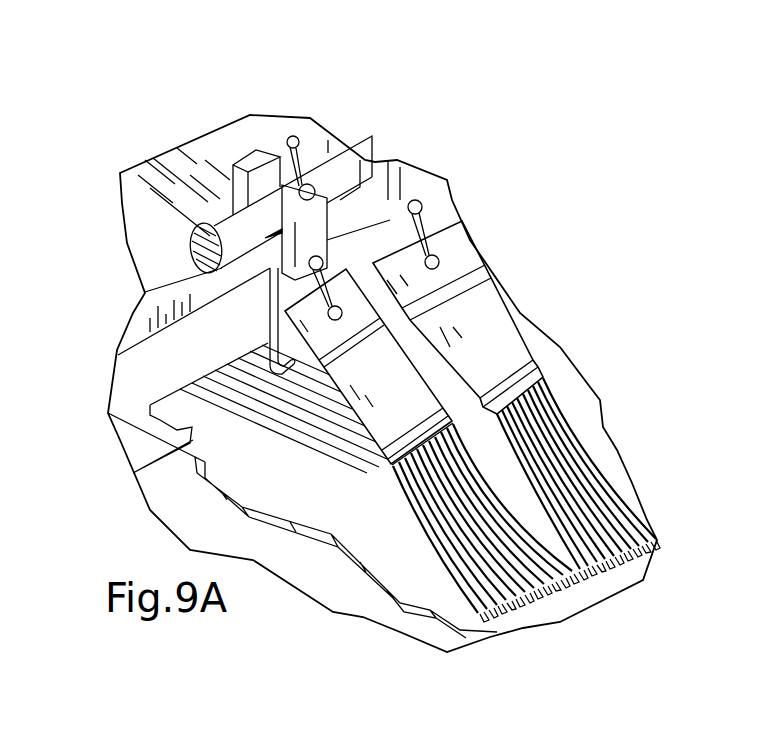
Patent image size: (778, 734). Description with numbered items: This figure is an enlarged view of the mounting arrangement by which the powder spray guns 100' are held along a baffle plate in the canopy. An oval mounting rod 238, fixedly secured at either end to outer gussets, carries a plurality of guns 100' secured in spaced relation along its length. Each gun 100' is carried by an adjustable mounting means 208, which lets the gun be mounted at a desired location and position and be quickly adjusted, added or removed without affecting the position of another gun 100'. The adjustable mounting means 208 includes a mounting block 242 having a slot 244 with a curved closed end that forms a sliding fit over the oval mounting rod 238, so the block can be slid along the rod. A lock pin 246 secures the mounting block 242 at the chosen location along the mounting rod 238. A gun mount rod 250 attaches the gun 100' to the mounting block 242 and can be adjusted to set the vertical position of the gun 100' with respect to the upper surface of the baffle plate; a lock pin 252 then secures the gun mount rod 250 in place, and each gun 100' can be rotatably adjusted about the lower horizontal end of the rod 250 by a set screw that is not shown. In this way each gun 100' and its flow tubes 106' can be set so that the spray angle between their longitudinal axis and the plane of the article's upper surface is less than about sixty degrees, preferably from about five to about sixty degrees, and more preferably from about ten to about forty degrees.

The adjustable mounting means 208 is at (238, 136).
The oval mounting rod 238 is at (237, 231).
The slot 244 is at (261, 177).
The lock pin 246 is at (245, 252).
The mounting block 242 is at (272, 249).
The gun mount rod 250 is at (262, 333).
The lock pin 252 is at (323, 265).
The gun 100' is at (493, 417).
The flow tubes 106' is at (578, 620).